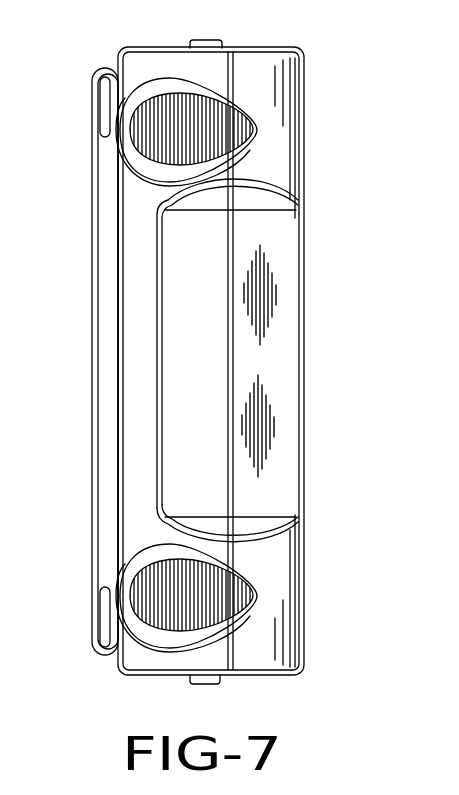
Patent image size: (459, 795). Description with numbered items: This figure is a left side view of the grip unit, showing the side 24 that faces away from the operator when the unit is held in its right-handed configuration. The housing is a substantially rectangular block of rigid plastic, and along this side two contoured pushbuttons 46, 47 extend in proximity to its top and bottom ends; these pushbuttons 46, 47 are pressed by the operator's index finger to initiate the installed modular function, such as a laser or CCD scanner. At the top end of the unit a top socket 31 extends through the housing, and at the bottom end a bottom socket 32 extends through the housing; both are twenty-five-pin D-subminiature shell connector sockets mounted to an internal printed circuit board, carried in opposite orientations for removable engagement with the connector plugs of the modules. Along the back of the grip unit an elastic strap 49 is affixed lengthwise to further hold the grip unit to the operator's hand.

The left side 24 is at (275, 372).
The top socket 31 is at (204, 46).
The bottom socket 32 is at (190, 682).
The contoured pushbutton 46 is at (202, 128).
The contoured pushbutton 47 is at (210, 595).
The elastic strap 49 is at (93, 330).